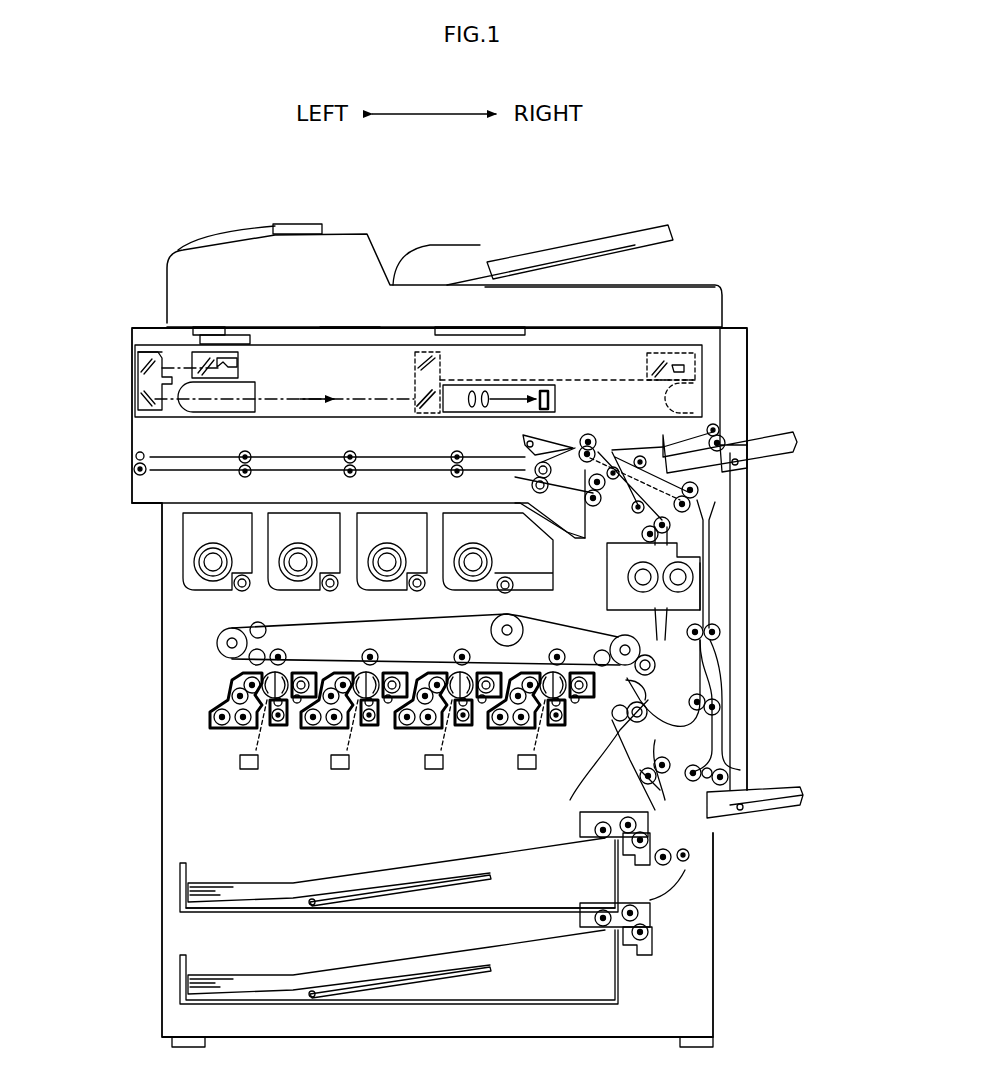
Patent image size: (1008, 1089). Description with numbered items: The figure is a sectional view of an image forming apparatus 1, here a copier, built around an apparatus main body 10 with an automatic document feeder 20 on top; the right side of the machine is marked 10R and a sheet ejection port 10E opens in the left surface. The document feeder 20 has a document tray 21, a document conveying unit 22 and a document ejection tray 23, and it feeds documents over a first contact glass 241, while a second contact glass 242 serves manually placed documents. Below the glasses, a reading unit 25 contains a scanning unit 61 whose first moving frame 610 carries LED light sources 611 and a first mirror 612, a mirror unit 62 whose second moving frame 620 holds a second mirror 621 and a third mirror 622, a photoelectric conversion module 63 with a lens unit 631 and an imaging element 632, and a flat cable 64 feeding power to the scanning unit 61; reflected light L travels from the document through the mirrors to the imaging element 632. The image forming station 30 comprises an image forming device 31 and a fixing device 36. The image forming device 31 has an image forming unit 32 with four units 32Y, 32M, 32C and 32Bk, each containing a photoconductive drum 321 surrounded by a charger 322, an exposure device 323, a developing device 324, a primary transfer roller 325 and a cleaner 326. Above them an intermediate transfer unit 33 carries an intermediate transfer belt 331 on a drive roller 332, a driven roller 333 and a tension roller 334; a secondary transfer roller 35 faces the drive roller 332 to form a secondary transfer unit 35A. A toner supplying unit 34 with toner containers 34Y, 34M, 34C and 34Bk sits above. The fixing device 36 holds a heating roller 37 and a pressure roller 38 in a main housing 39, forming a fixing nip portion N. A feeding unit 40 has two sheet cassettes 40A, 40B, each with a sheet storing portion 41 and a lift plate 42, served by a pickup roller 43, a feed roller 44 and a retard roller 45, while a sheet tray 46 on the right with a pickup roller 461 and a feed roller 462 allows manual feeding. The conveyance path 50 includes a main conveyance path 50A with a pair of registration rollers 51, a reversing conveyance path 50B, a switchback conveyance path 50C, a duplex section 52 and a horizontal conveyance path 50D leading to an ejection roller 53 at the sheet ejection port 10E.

The image forming apparatus 1 is at (784, 136).
The apparatus main body 10 is at (138, 774).
The sheet ejection port 10E is at (135, 459).
The right side of apparatus body 10R is at (756, 386).
The automatic document feeder 20 is at (150, 250).
The document tray 21 is at (647, 226).
The document conveying unit 22 is at (280, 226).
The document ejection tray 23 is at (648, 285).
The first contact glass 241 is at (210, 338).
The second contact glass 242 is at (510, 332).
The reading unit 25 is at (705, 358).
The image forming station 30 is at (845, 505).
The image forming device 31 is at (630, 626).
The image forming unit 32 is at (180, 713).
The image forming unit for yellow 32Y is at (242, 790).
The image forming unit for magenta 32M is at (322, 790).
The image forming unit for cyan 32C is at (412, 778).
The image forming unit for black 32Bk is at (508, 764).
The photoconductive drum 321 is at (290, 678).
The charger 322 is at (278, 728).
The exposure device 323 is at (240, 749).
The developing device 324 is at (226, 697).
The primary transfer roller 325 is at (286, 651).
The cleaner 326 is at (293, 703).
The intermediate transfer unit 33 is at (190, 641).
The intermediate transfer belt 331 is at (375, 617).
The drive roller 332 is at (618, 642).
The driven roller 333 is at (224, 636).
The tension roller 334 is at (520, 633).
The toner supplying unit 34 is at (175, 560).
The toner container for yellow 34Y is at (218, 590).
The toner container for magenta 34M is at (308, 590).
The toner container for cyan 34C is at (398, 590).
The toner container for black 34Bk is at (486, 590).
The secondary transfer roller 35 is at (658, 666).
The secondary transfer unit 35A is at (615, 722).
The fixing device 36 is at (702, 549).
The heating roller 37 is at (628, 577).
The pressure roller 38 is at (692, 571).
The main housing 39 is at (705, 582).
The feeding unit 40 is at (95, 880).
The sheet cassette 40A is at (178, 884).
The sheet cassette 40B is at (178, 964).
The sheet storing portion 41 is at (345, 914).
The lift plate 42 is at (466, 890).
The pickup roller 43 is at (595, 831).
The feed roller 44 is at (628, 813).
The retard roller 45 is at (640, 862).
The sheet tray 46 is at (790, 797).
The pickup roller 461 is at (728, 770).
The feed roller 462 is at (720, 748).
The conveyance path 50 is at (650, 690).
The main conveyance path 50A is at (630, 776).
The reversing conveyance path 50B is at (702, 520).
The switchback conveyance path 50C is at (600, 446).
The horizontal conveyance path 50D is at (330, 470).
The pair of registration rollers 51 is at (622, 720).
The reverse conveyance path 52 is at (698, 754).
The ejection roller 53 is at (137, 476).
The scanning unit 61 is at (250, 362).
The first moving frame 610 is at (240, 372).
The LED light sources 611 is at (226, 369).
The first mirror 612 is at (206, 378).
The mirror unit 62 is at (133, 380).
The second moving frame 620 is at (158, 350).
The second mirror 621 is at (137, 360).
The third mirror 622 is at (135, 398).
The photoelectric conversion module 63 is at (510, 412).
The lens unit 631 is at (455, 414).
The imaging element 632 is at (556, 399).
The flat cable 64 is at (305, 410).
The reflected light L is at (355, 392).
The fixing nip portion N is at (640, 571).